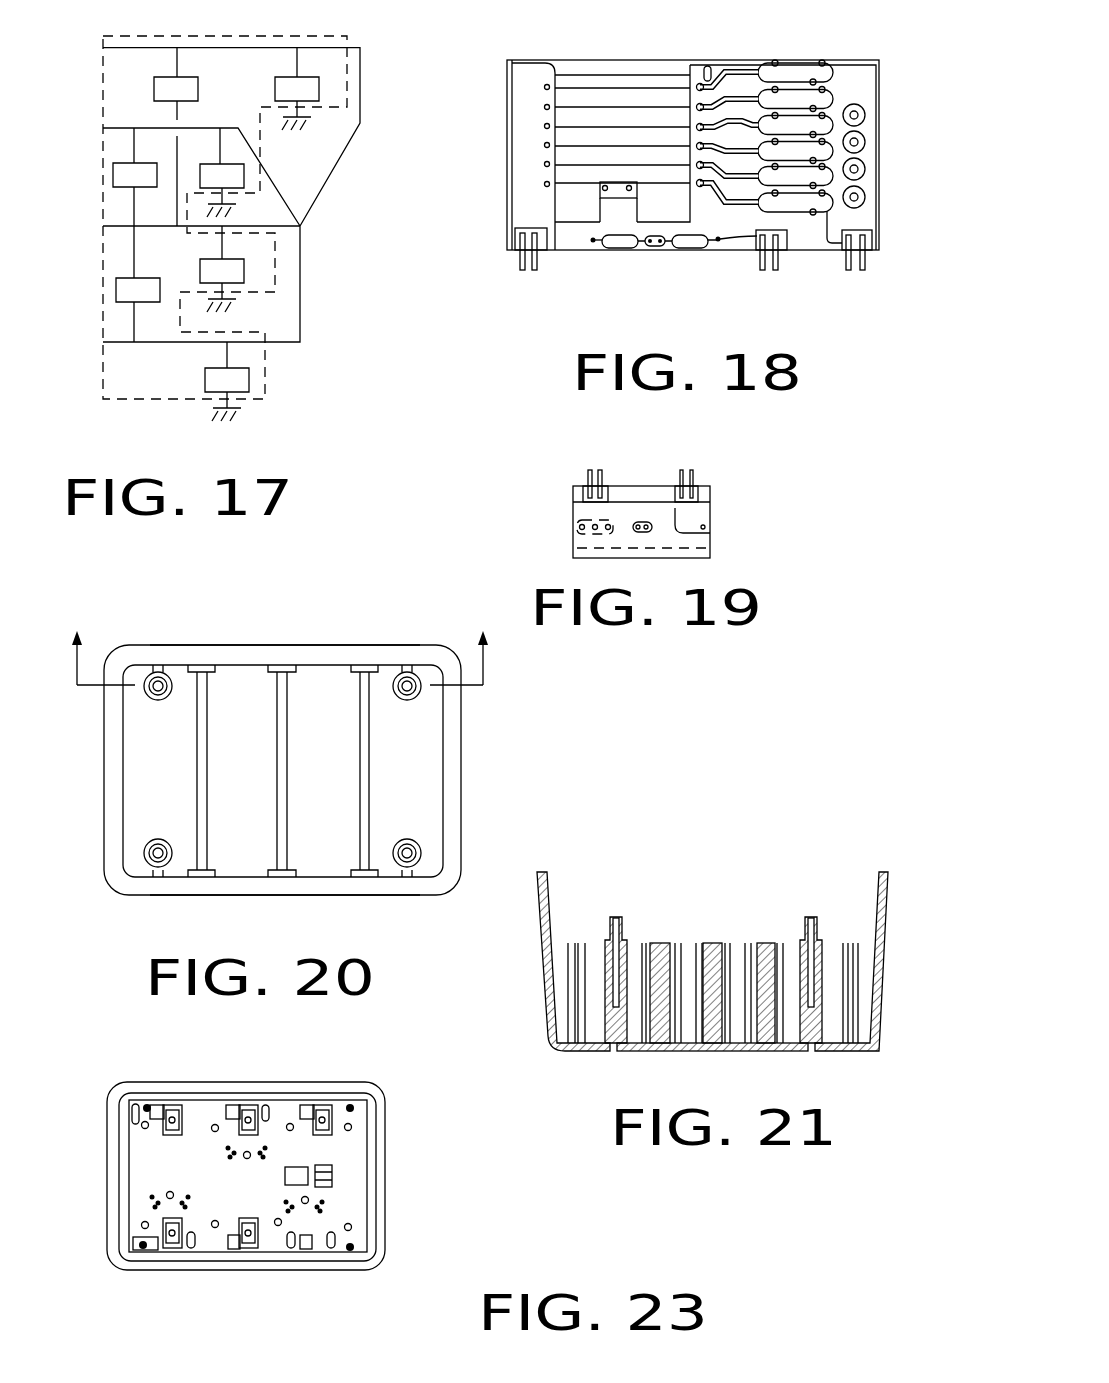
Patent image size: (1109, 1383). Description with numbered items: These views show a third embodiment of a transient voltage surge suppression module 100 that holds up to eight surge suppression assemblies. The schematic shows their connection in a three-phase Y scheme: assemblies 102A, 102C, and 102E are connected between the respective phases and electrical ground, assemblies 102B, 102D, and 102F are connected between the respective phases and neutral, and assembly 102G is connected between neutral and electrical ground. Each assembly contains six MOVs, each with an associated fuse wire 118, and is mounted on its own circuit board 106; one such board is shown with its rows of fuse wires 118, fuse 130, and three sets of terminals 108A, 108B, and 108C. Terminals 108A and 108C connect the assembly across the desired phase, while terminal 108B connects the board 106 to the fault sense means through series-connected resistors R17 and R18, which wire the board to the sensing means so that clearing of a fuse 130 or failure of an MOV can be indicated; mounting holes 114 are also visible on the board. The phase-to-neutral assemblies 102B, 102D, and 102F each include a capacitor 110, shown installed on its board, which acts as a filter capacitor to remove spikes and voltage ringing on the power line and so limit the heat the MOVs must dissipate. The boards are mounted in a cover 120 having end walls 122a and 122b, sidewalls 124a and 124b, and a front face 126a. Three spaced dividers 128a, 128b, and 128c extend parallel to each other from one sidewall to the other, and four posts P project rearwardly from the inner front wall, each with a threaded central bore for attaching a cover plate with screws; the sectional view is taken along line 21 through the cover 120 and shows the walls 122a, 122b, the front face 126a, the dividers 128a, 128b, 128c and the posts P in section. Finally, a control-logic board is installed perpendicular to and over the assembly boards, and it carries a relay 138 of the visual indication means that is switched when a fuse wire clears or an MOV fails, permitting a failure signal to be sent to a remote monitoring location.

In FIG. 17, the TVSS module 100 is at (100, 372).
In FIG. 17, the surge suppression assembly 102A is at (319, 88).
In FIG. 17, the surge suppression assembly 102B is at (154, 83).
In FIG. 17, the surge suppression assembly 102C is at (244, 175).
In FIG. 17, the surge suppression assembly 102D is at (113, 176).
In FIG. 17, the surge suppression assembly 102E is at (244, 270).
In FIG. 17, the surge suppression assembly 102F is at (116, 290).
In FIG. 17, the surge suppression assembly 102G is at (248, 382).
In FIG. 18, the circuit board 106 is at (895, 67).
In FIG. 18, the terminals 108A is at (507, 242).
In FIG. 18, the terminals 108B is at (790, 250).
In FIG. 18, the terminals 108C is at (875, 243).
In FIG. 19, the capacitor 110 is at (573, 535).
In FIG. 18, the mounting holes 114 is at (835, 102).
In FIG. 18, the fuse wire 118 is at (605, 106).
In FIG. 18, the fuse 130 is at (571, 73).
In FIG. 20, the fuse 130 is at (147, 855).
In FIG. 18, the resistor R17 is at (622, 242).
In FIG. 18, the resistor R18 is at (684, 248).
In FIG. 21, the cover 120 is at (598, 1067).
In FIG. 23, the cover 120 is at (405, 1136).
In FIG. 20, the end wall 122a is at (113, 752).
In FIG. 21, the end wall 122a is at (543, 980).
In FIG. 23, the end wall 122a is at (112, 1155).
In FIG. 20, the end wall 122b is at (450, 747).
In FIG. 21, the end wall 122b is at (883, 943).
In FIG. 23, the end wall 122b is at (378, 1193).
In FIG. 20, the sidewall 124a is at (328, 655).
In FIG. 23, the sidewall 124a is at (290, 1083).
In FIG. 20, the sidewall 124b is at (370, 885).
In FIG. 23, the sidewall 124b is at (215, 1267).
In FIG. 21, the front face 126a is at (750, 1051).
In FIG. 20, the divider 128a is at (197, 787).
In FIG. 21, the divider 128a is at (662, 943).
In FIG. 20, the divider 128b is at (277, 813).
In FIG. 21, the divider 128b is at (715, 943).
In FIG. 20, the divider 128c is at (360, 815).
In FIG. 21, the divider 128c is at (765, 943).
In FIG. 23, the relay 138 is at (298, 1183).
In FIG. 20, the post P is at (170, 678).
In FIG. 21, the post P is at (610, 917).
In FIG. 23, the post P is at (147, 1104).
In FIG. 20, the section line 21 is at (279, 647).